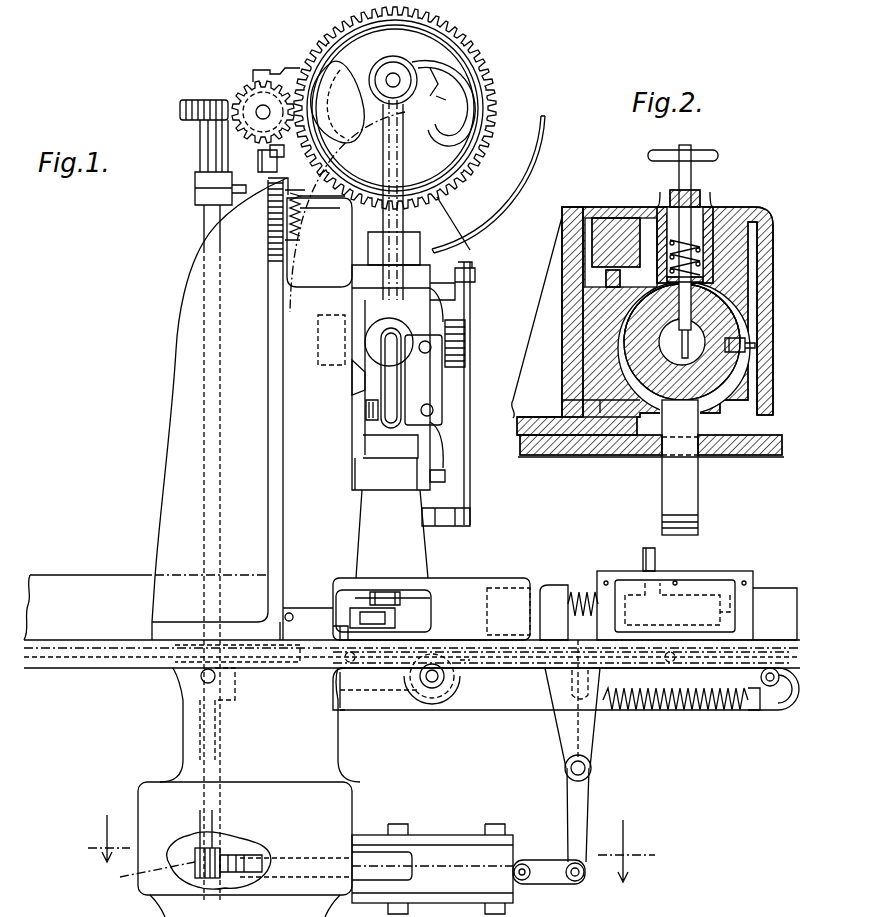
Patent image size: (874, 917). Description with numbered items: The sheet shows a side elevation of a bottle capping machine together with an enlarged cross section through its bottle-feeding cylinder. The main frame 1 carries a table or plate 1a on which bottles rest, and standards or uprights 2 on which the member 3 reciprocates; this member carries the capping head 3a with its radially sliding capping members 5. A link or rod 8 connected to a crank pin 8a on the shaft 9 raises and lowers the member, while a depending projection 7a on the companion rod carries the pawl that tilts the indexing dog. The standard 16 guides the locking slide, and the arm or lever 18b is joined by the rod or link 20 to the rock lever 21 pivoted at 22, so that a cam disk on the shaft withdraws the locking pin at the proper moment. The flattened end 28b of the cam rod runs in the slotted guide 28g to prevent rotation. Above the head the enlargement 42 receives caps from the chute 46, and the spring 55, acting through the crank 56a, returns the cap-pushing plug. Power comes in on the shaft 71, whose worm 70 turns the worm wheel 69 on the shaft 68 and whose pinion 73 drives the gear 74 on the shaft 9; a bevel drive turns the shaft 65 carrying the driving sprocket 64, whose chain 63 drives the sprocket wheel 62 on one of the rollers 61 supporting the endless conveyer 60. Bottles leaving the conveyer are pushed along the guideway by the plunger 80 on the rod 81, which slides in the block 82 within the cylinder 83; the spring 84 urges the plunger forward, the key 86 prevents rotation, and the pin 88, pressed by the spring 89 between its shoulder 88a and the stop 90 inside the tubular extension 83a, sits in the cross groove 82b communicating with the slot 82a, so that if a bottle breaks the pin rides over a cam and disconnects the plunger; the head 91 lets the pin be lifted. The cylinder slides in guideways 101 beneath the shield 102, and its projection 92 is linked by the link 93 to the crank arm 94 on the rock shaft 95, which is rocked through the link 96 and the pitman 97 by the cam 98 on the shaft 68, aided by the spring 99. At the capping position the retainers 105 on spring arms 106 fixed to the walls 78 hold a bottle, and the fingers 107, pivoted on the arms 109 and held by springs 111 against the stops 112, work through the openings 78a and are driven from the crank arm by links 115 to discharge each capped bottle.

In FIG. 1, the main frame 1 is at (330, 800).
In FIG. 1, the table or plate 1a is at (108, 652).
In FIG. 2, the table or plate 1a is at (595, 458).
In FIG. 1, the standards or uprights 2 is at (178, 433).
In FIG. 1, the member 3 is at (361, 848).
In FIG. 1, the capping head 3a is at (355, 382).
In FIG. 1, the capping members 5 is at (466, 330).
In FIG. 1, the depending projection 7a is at (390, 437).
In FIG. 1, the link or rod 8 is at (403, 176).
In FIG. 1, the crank pin 8a is at (465, 65).
In FIG. 1, the shaft 9 is at (405, 118).
In FIG. 1, the standard 16 is at (392, 534).
In FIG. 1, the arm or lever 18b is at (440, 510).
In FIG. 1, the rod or link 20 is at (482, 393).
In FIG. 1, the rock lever 21 is at (408, 226).
In FIG. 1, the pivot 22 is at (476, 275).
In FIG. 1, the flattened end 28b is at (350, 348).
In FIG. 1, the slotted guide 28g is at (403, 373).
In FIG. 1, the head or enlargement 42 is at (363, 255).
In FIG. 1, the chute 46 is at (466, 220).
In FIG. 1, the spring 55 is at (306, 209).
In FIG. 1, the crank 56a is at (258, 170).
In FIG. 1, the endless conveyer 60 is at (508, 712).
In FIG. 1, the rollers 61 is at (782, 712).
In FIG. 1, the sprocket wheel 62 is at (412, 708).
In FIG. 1, the chain 63 is at (372, 712).
In FIG. 1, the driving sprocket 64 is at (236, 690).
In FIG. 1, the shaft 65 is at (202, 680).
In FIG. 1, the shaft 68 is at (204, 240).
In FIG. 1, the worm wheel 69 is at (180, 110).
In FIG. 1, the worm 70 is at (240, 92).
In FIG. 1, the shaft 71 is at (275, 68).
In FIG. 1, the pinion 73 is at (281, 149).
In FIG. 1, the gear 74 is at (532, 84).
In FIG. 1, the walls 78 is at (88, 607).
In FIG. 1, the openings 78a is at (352, 590).
In FIG. 1, the plunger 80 is at (546, 585).
In FIG. 2, the rod 81 is at (762, 310).
In FIG. 2, the block 82 is at (728, 392).
In FIG. 2, the longitudinal slot or groove 82a is at (705, 300).
In FIG. 2, the recess or cross groove 82b is at (537, 317).
In FIG. 1, the cylinder 83 is at (705, 588).
In FIG. 2, the cylinder 83 is at (760, 280).
In FIG. 2, the tubular extension 83a is at (648, 248).
In FIG. 1, the spring 84 is at (573, 592).
In FIG. 2, the key 86 is at (757, 345).
In FIG. 1, the pin 88 is at (643, 560).
In FIG. 2, the pin 88 is at (690, 172).
In FIG. 2, the shoulder 88a is at (562, 288).
In FIG. 2, the spring 89 is at (704, 245).
In FIG. 2, the stop 90 is at (675, 186).
In FIG. 2, the projection or head 91 is at (708, 150).
In FIG. 2, the projection 92 is at (700, 478).
In FIG. 1, the link 93 is at (561, 657).
In FIG. 1, the crank arm 94 is at (562, 740).
In FIG. 1, the rock shaft 95 is at (592, 768).
In FIG. 1, the link 96 is at (542, 866).
In FIG. 1, the sliding rod or pitman 97 is at (262, 862).
In FIG. 1, the cam 98 is at (230, 792).
In FIG. 1, the spring 99 is at (722, 730).
In FIG. 2, the guideways 101 is at (562, 240).
In FIG. 2, the shield 102 is at (580, 207).
In FIG. 1, the retainers 105 is at (386, 624).
In FIG. 1, the spring arms 106 is at (308, 602).
In FIG. 1, the fingers 107 is at (384, 592).
In FIG. 1, the arms 109 is at (334, 633).
In FIG. 1, the springs 111 is at (402, 596).
In FIG. 1, the stops 112 is at (396, 612).
In FIG. 1, the links 115 is at (498, 676).